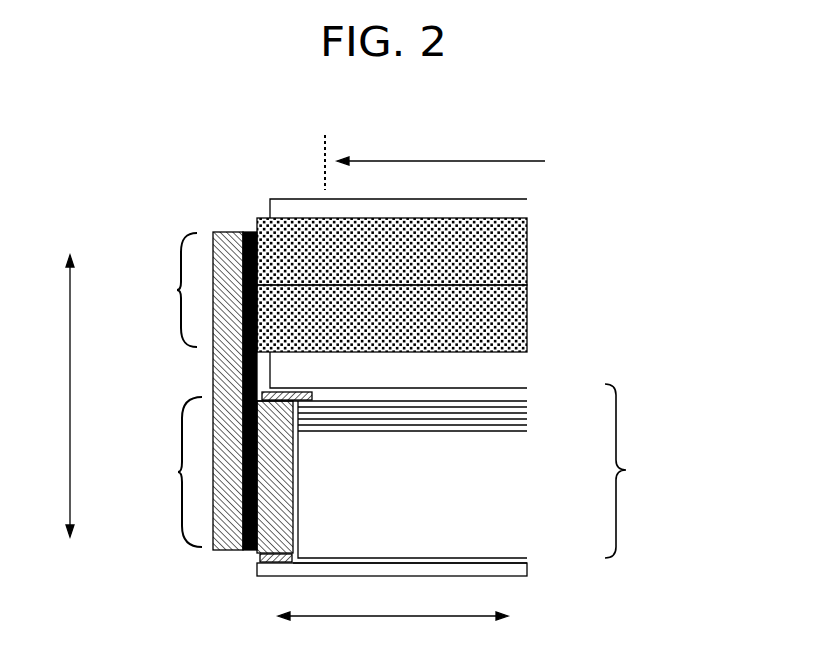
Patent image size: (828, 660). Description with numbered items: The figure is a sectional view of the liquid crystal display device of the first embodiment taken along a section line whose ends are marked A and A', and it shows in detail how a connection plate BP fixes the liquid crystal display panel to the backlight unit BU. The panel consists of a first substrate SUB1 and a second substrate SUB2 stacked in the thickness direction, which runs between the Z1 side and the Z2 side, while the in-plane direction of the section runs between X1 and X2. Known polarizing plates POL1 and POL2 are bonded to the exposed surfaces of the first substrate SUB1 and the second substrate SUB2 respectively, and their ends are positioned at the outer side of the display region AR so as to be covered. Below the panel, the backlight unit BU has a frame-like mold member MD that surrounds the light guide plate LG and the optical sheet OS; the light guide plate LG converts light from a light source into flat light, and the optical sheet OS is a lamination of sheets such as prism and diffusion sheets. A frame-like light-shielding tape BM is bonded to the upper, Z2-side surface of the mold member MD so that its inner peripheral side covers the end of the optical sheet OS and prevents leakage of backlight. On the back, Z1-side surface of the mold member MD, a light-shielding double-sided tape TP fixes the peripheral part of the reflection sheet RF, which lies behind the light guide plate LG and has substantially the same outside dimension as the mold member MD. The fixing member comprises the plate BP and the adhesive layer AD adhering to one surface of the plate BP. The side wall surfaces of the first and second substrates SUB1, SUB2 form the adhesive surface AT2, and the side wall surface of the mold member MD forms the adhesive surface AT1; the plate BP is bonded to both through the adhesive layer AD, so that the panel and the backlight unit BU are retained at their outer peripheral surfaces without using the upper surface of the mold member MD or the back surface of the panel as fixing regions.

The plate BP is at (218, 232).
The adhesive layer AD is at (248, 231).
The polarizing plate POL2 is at (506, 208).
The second substrate SUB2 is at (506, 257).
The first substrate SUB1 is at (506, 319).
The polarizing plate POL1 is at (506, 373).
The light-shielding tape BM is at (312, 396).
The optical sheet OS is at (533, 401).
The light guide plate LG is at (497, 463).
The mold member MD is at (290, 527).
The double-sided tape TP is at (295, 556).
The reflection sheet RF is at (523, 572).
The backlight unit BU is at (633, 471).
The side wall part AT1 is at (166, 472).
The side wall part AT2 is at (163, 290).
The display region AR is at (441, 151).
The section line end A is at (281, 139).
The section line end A' is at (514, 102).
The Z1 side Z1 is at (71, 543).
The Z2 side Z2 is at (71, 378).
The X1 direction X1 is at (374, 616).
The X2 direction X2 is at (520, 616).